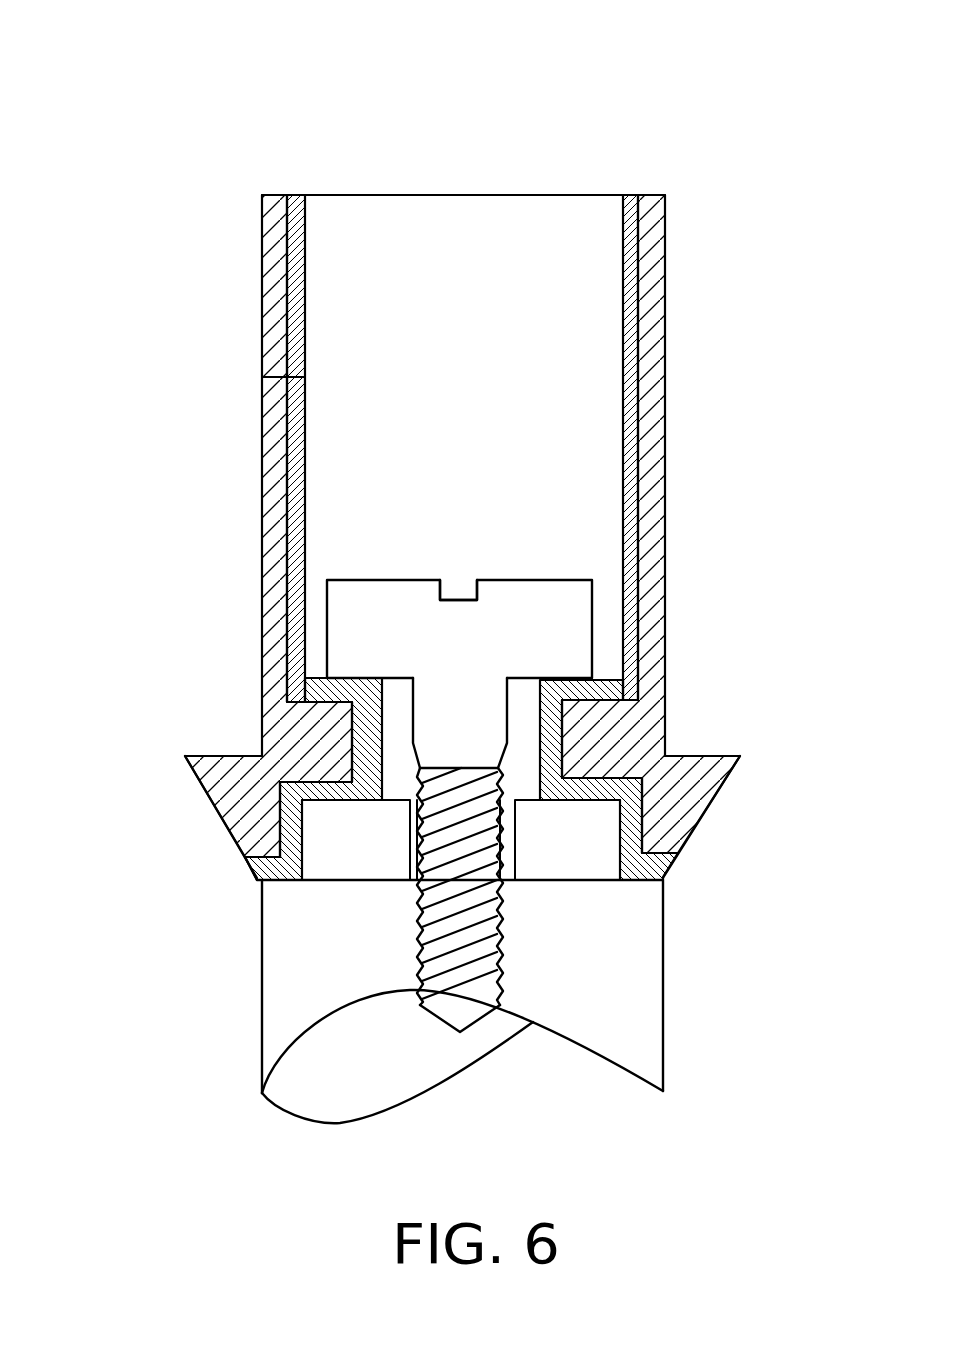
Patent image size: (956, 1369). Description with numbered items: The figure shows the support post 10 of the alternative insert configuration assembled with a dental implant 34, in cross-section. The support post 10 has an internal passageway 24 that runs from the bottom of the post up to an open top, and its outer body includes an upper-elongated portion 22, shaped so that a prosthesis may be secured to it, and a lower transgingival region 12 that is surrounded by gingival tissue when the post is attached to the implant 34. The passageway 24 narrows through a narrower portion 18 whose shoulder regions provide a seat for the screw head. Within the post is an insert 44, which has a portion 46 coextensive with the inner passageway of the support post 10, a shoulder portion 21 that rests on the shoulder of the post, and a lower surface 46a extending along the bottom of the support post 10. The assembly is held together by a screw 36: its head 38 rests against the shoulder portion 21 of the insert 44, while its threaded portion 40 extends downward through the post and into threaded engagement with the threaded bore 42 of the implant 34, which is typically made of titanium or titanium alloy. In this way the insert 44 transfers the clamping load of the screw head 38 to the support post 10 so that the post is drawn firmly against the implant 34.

The support post 10 is at (615, 132).
The transgingival region 12 is at (703, 822).
The narrower portion 18 is at (523, 720).
The shoulder portion 21 is at (363, 677).
The upper-elongated portion 22 is at (665, 413).
The passageway 24 is at (482, 193).
The implant 34 is at (640, 930).
The screw 36 is at (448, 567).
The head 38 is at (548, 578).
The threaded portion 40 is at (430, 915).
The threaded bore 42 is at (500, 975).
The insert 44 is at (614, 417).
The portion 46 is at (262, 377).
The lower surface 46a is at (253, 873).